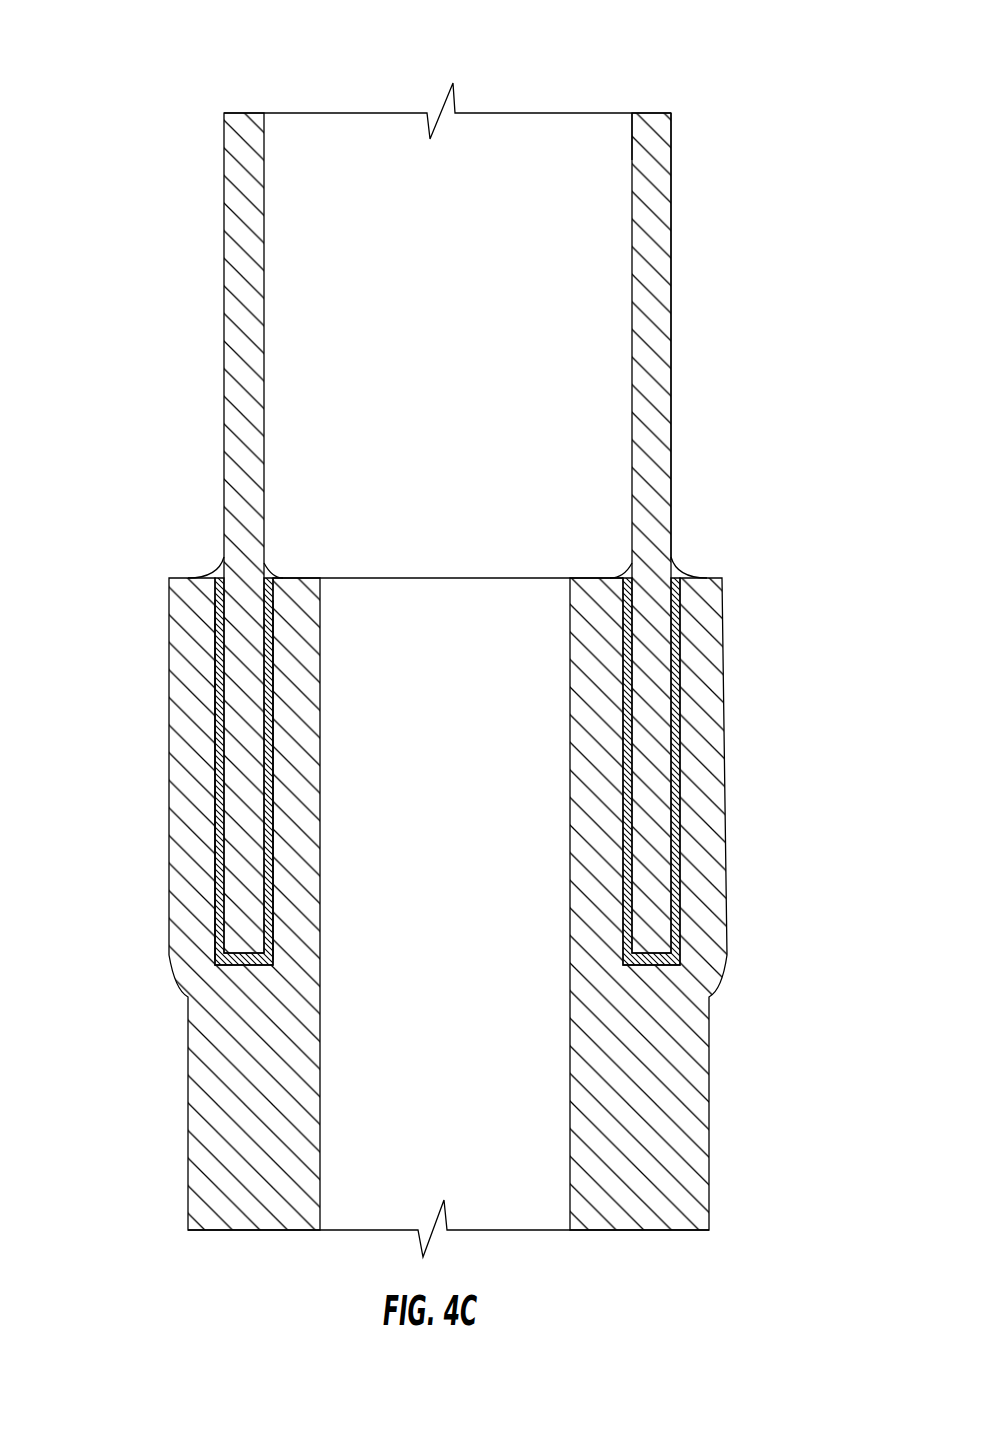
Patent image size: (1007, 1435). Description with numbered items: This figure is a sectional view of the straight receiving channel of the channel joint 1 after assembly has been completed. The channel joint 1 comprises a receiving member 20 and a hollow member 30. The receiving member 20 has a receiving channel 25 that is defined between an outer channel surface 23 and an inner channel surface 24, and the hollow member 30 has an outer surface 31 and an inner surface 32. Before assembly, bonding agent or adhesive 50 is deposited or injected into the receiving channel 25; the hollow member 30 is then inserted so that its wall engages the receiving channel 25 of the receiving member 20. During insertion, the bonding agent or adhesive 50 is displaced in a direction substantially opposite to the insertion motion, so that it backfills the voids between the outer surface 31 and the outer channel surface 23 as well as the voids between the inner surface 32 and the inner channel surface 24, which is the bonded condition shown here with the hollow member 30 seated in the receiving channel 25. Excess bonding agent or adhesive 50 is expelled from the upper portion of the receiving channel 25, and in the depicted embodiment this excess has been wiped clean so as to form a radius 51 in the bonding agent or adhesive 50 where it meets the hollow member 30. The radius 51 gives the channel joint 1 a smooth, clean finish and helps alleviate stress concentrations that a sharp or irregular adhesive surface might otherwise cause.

The channel joint 1 is at (219, 48).
The receiving member 20 is at (225, 1030).
The outer channel surface 23 is at (217, 690).
The inner channel surface 24 is at (272, 698).
The receiving channel 25 is at (205, 893).
The hollow member 30 is at (657, 233).
The outer surface 31 is at (672, 158).
The inner surface 32 is at (630, 143).
The bonding agent or adhesive 50 is at (277, 570).
The radius 51 is at (190, 556).